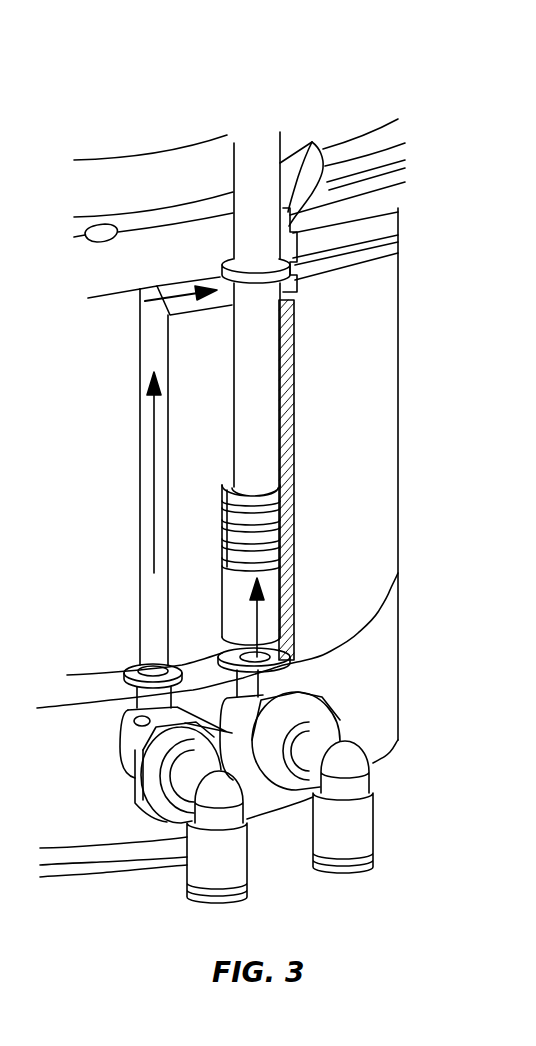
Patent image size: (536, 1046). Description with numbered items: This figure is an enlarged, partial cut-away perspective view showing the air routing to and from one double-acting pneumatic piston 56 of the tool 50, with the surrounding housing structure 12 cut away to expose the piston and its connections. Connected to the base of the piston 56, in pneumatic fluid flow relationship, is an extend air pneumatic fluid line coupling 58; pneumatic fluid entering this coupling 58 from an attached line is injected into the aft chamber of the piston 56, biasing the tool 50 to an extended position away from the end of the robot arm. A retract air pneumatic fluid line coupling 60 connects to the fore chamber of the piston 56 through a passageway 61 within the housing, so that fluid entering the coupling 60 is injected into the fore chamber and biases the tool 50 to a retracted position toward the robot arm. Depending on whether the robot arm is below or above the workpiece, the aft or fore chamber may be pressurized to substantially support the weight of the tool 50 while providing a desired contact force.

The tool 50 is at (279, 520).
The housing 12 is at (343, 538).
The double-acting pneumatic piston 56 is at (253, 403).
The passageway 61 is at (139, 521).
The extend air pneumatic fluid line coupling 58 is at (348, 823).
The retract air pneumatic fluid line coupling 60 is at (217, 863).